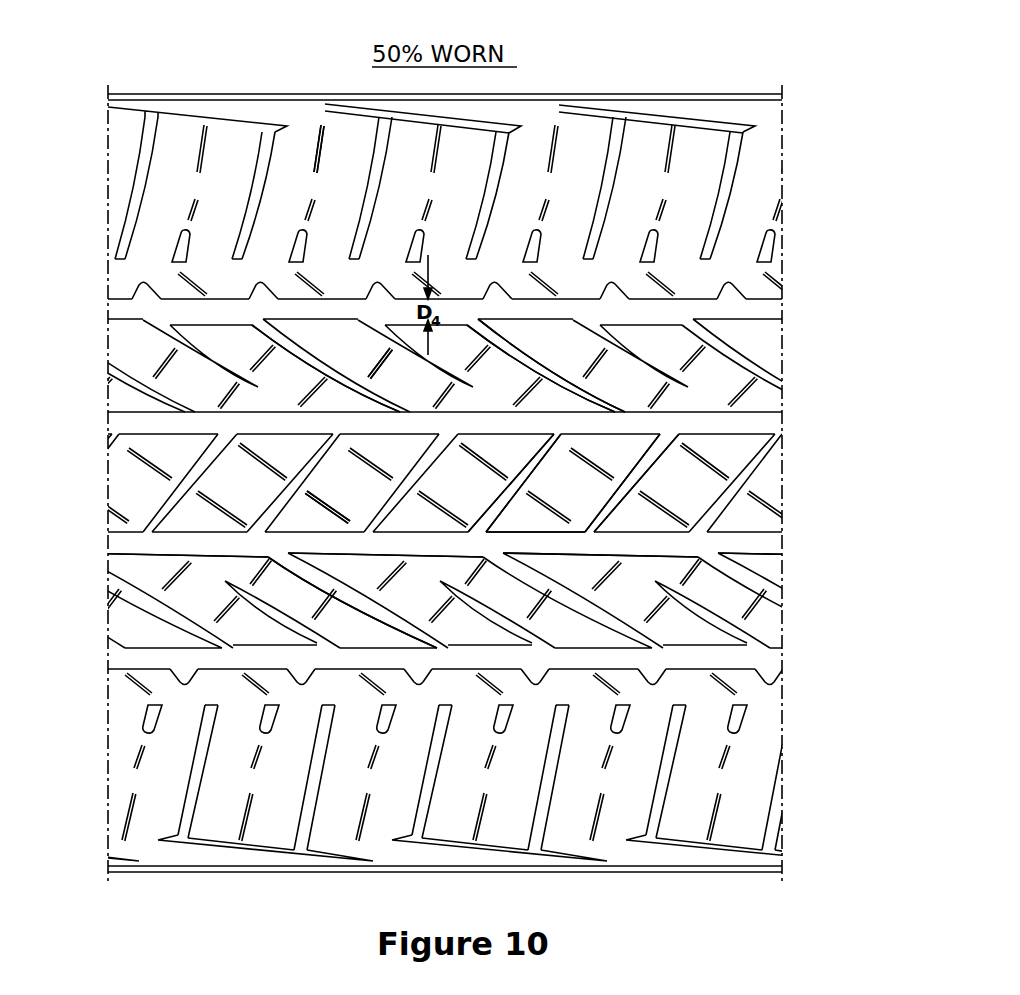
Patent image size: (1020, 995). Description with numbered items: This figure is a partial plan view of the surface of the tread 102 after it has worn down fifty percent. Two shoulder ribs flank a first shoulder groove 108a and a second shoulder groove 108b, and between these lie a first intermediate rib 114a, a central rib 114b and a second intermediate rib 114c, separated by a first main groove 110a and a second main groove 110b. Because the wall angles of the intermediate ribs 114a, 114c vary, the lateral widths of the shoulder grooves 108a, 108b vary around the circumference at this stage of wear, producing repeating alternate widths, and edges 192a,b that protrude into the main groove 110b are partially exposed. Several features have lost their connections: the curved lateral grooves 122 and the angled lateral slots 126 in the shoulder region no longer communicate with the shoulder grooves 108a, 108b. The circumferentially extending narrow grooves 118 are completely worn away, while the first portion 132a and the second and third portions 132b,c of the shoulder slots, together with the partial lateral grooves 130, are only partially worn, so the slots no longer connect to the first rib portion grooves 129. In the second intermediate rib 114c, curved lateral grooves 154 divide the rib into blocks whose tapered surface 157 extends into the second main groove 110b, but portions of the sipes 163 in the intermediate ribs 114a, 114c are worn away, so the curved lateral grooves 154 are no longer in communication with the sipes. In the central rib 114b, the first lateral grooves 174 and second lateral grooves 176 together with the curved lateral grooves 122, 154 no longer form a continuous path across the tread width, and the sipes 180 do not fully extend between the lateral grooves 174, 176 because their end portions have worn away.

The tread 102 is at (140, 76).
The first portion of slots 132a is at (306, 207).
The second and third portions of slots 132b,c is at (308, 172).
The first rib portion grooves 129 is at (463, 123).
The partial lateral grooves 130 is at (540, 243).
The circumferentially extending narrow grooves 118 is at (733, 250).
The first shoulder groove 108a is at (120, 312).
The second shoulder groove 108b is at (120, 660).
The first main groove 110a is at (118, 420).
The second main groove 110b is at (118, 540).
The first intermediate rib 114a is at (763, 343).
The central rib 114b is at (765, 476).
The second intermediate rib 114c is at (765, 614).
The sipes 163 is at (375, 365).
The curved lateral grooves 154 is at (565, 378).
The tapered surface 157 is at (398, 412).
The sipes 180 is at (348, 520).
The second lateral grooves 176 is at (510, 497).
The first lateral grooves 174 is at (640, 463).
The edges of second circumferential walls 192a,b is at (560, 534).
The angled lateral slots 126 is at (490, 690).
The curved lateral grooves 122 is at (560, 720).